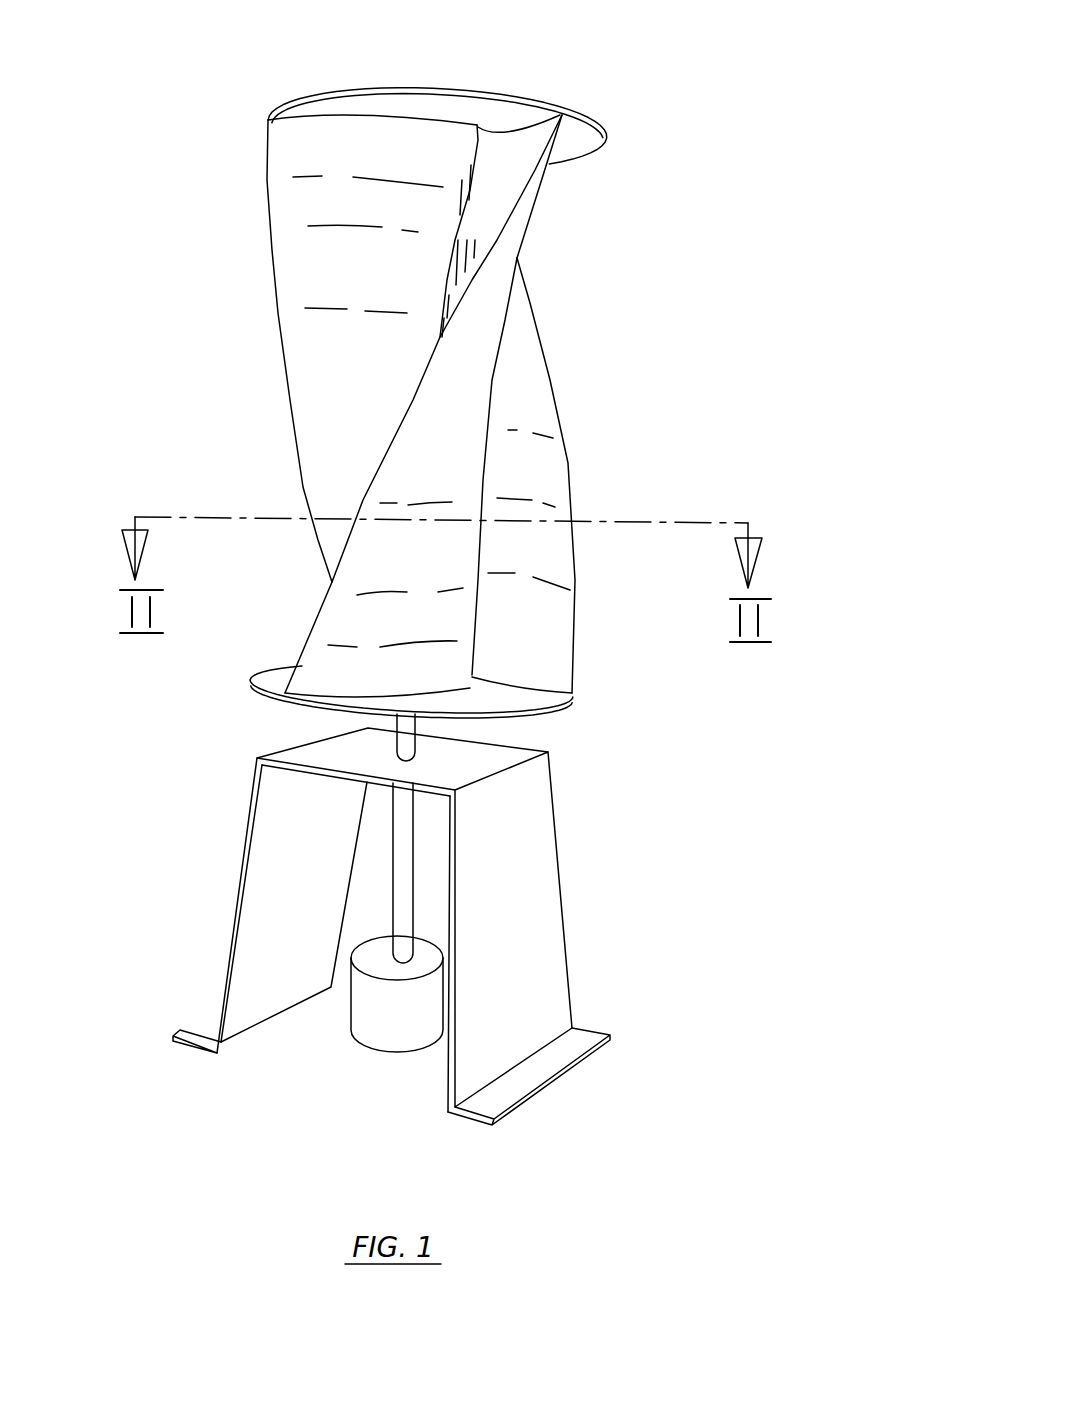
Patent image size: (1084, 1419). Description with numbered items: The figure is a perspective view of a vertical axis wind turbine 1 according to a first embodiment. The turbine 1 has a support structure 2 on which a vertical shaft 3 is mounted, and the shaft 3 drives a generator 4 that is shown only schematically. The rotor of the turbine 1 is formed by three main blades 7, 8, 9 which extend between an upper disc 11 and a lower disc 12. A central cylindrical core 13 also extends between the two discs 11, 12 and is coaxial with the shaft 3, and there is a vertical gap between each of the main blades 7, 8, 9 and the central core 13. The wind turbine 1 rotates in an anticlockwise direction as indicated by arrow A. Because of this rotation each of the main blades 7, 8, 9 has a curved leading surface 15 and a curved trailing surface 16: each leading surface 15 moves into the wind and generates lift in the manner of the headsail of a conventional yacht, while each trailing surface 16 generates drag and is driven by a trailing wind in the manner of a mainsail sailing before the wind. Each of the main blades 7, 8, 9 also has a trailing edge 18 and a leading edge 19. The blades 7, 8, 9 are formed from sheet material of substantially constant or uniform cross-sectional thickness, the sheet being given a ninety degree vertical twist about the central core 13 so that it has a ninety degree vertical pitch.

The vertical axis wind turbine 1 is at (653, 148).
The support structure 2 is at (550, 940).
The vertical shaft 3 is at (398, 835).
The generator 4 is at (386, 1027).
The main blade 7 is at (403, 568).
The main blade 8 is at (320, 368).
The main blade 9 is at (530, 398).
The upper disc 11 is at (425, 88).
The lower disc 12 is at (513, 695).
The central cylindrical core 13 is at (480, 207).
The leading surface 15 is at (305, 273).
The trailing surface 16 is at (540, 547).
The trailing edge 18 is at (567, 467).
The leading edge 19 is at (433, 334).
The arrow A is at (620, 666).